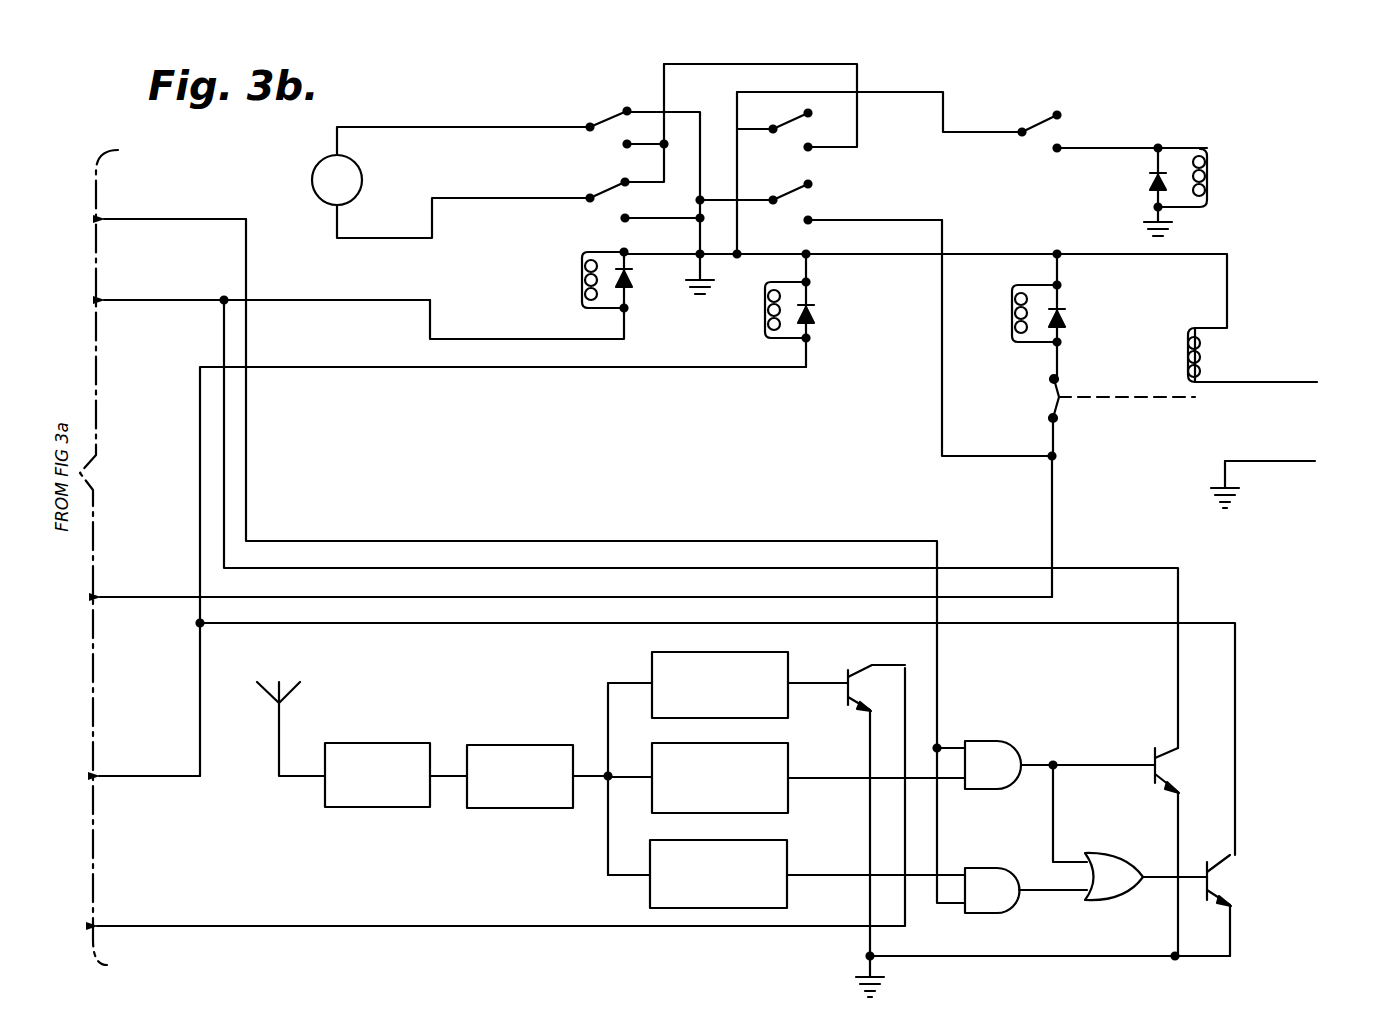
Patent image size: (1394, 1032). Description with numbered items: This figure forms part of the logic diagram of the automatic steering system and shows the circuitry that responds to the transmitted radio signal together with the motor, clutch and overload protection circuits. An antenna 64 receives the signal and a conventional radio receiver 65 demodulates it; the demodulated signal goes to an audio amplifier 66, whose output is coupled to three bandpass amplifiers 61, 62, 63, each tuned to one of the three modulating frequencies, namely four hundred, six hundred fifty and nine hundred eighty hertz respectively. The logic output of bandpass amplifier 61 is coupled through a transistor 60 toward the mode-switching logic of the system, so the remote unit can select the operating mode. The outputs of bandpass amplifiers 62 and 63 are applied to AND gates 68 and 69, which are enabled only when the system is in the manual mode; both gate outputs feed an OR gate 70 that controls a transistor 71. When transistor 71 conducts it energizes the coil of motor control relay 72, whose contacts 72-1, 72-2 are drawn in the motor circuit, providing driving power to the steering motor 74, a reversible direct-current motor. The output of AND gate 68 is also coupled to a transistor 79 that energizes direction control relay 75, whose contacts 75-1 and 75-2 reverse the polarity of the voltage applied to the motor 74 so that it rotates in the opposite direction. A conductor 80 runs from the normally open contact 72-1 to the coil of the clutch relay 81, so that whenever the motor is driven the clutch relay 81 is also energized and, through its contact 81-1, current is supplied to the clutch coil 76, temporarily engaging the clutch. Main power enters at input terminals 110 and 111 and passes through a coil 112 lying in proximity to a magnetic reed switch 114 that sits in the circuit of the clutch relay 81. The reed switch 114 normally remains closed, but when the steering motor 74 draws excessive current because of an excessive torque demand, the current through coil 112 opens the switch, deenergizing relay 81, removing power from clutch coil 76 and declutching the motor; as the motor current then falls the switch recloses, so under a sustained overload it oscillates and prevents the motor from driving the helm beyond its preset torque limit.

The steering motor 74 is at (320, 166).
The contact of direction control relay 75-2 is at (613, 137).
The contact of direction control relay 75-1 is at (613, 207).
The relay 72 contact 72-2 is at (790, 137).
The normally open contact of motor control relay 72-1 is at (808, 202).
The relay 81 contact 81-1 is at (1062, 131).
The conductor 80 is at (890, 220).
The clutch coil 76 is at (1209, 186).
The direction control relay 75 is at (580, 281).
The motor control relay 72 is at (764, 326).
The clutch relay 81 is at (1010, 326).
The coil 112 is at (1185, 350).
The input terminal 110 is at (1240, 382).
The magnetic reed switch 114 is at (1047, 405).
The input terminal 111 is at (1280, 462).
The antenna 64 is at (297, 690).
The radio receiver 65 is at (413, 712).
The audio amplifier 66 is at (550, 722).
The bandpass amplifier 61 is at (788, 670).
The bandpass amplifier 62 is at (788, 765).
The bandpass amplifier 63 is at (787, 855).
The transistor 60 is at (857, 668).
The AND gate 68 is at (1031, 713).
The AND gate 69 is at (1026, 852).
The OR gate 70 is at (1117, 894).
The transistor 79 is at (1152, 752).
The transistor 71 is at (1214, 905).